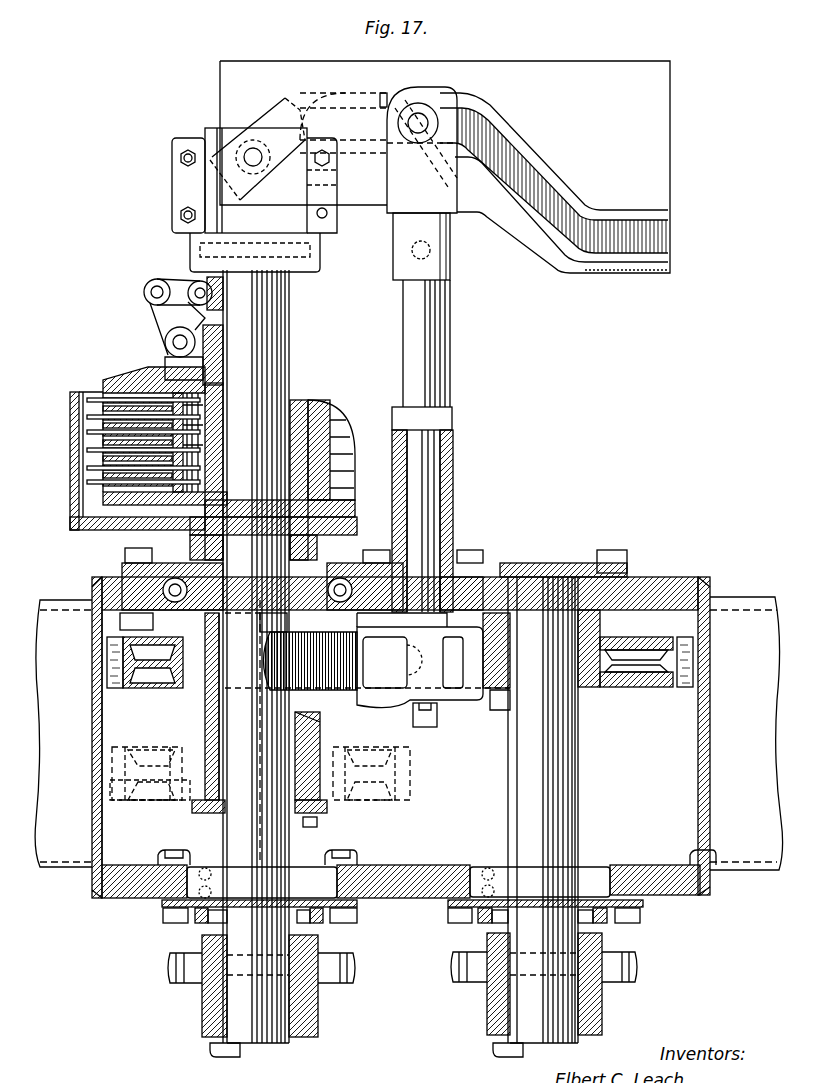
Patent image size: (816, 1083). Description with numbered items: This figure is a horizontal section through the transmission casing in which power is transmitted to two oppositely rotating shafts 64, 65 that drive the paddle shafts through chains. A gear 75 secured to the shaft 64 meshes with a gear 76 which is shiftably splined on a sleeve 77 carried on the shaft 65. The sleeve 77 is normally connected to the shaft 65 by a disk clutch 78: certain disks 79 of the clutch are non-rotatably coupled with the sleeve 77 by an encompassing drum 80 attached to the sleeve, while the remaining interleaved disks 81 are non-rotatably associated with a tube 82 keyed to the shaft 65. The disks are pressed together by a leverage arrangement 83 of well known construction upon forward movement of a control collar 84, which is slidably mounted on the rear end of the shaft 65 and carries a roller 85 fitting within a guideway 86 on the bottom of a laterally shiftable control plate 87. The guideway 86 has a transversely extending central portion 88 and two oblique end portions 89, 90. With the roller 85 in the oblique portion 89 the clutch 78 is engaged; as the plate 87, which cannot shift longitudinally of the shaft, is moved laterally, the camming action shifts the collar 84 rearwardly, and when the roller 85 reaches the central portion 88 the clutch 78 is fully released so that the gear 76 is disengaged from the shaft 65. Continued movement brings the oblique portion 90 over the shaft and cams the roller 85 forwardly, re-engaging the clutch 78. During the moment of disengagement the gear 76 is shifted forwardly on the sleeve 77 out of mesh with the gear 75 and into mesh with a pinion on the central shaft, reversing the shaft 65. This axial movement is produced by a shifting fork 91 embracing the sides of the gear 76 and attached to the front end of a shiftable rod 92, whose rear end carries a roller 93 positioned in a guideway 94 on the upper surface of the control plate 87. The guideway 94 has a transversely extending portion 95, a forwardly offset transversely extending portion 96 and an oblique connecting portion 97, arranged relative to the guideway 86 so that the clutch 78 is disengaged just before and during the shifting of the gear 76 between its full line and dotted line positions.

The shaft 64 is at (578, 800).
The shaft 65 is at (233, 838).
The gear 75 is at (630, 665).
The gear 76 is at (122, 812).
The sleeve 77 is at (208, 737).
The disk clutch 78 is at (133, 412).
The disks 79 is at (87, 432).
The drum 80 is at (87, 450).
The interleaved disks 81 is at (87, 482).
The tube 82 is at (214, 452).
The leverage arrangement 83 is at (183, 324).
The control collar 84 is at (176, 180).
The roller 85 is at (253, 143).
The guideway 86 is at (283, 128).
The control plate 87 is at (220, 78).
The transversely extending central portion 88 is at (350, 142).
The oblique end portion 89 is at (258, 198).
The oblique end portion 90 is at (428, 166).
The shifting fork 91 is at (352, 702).
The shiftable rod 92 is at (430, 488).
The roller 93 is at (413, 110).
The guideway 94 is at (503, 131).
The transversely extending portion 95 is at (477, 107).
The forwardly offset transversely extending portion 96 is at (623, 223).
The oblique connecting portion 97 is at (545, 177).